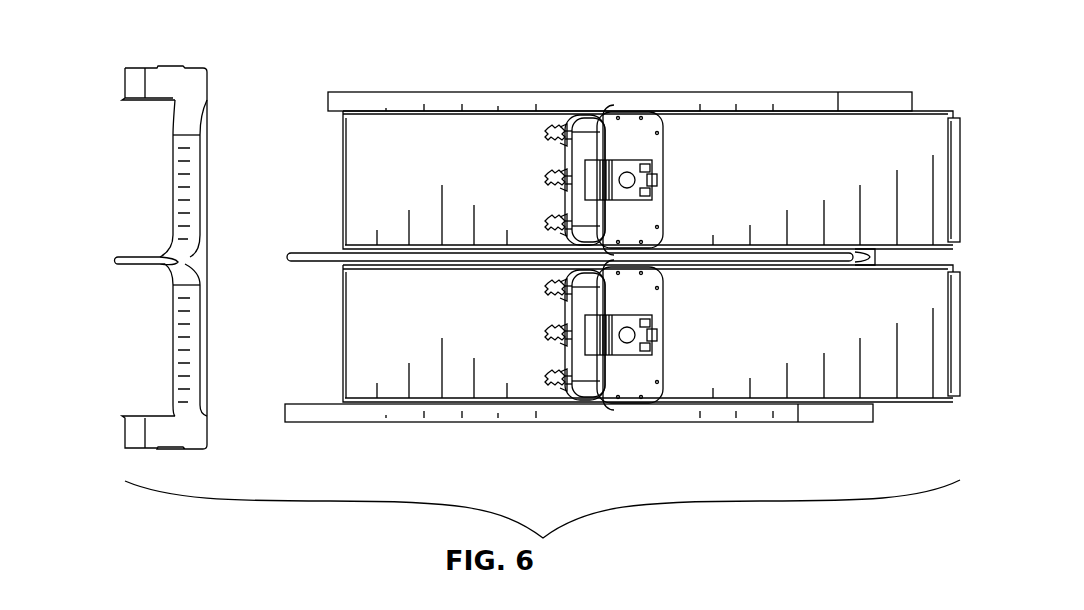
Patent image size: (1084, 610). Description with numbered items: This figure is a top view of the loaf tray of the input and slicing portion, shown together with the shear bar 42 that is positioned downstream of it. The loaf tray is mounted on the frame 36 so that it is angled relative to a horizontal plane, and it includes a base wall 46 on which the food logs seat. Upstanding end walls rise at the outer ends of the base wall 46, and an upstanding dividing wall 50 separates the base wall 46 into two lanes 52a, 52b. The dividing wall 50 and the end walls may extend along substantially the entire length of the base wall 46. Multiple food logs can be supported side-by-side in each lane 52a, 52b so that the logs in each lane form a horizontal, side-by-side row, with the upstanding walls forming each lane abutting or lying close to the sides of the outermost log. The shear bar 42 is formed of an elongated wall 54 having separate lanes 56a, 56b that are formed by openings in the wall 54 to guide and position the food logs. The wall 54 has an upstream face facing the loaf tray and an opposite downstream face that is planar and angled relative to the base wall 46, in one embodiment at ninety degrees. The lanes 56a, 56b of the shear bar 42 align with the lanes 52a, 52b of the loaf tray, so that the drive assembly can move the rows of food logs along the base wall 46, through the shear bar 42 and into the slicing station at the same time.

The frame 36 is at (437, 87).
The shear bar 42 is at (195, 67).
The base wall 46 is at (866, 137).
The dividing wall 50 is at (845, 258).
The lane 52a is at (795, 386).
The lane 52b is at (782, 135).
The elongated wall 54 is at (183, 428).
The lane 56a is at (135, 332).
The lane 56b is at (150, 184).